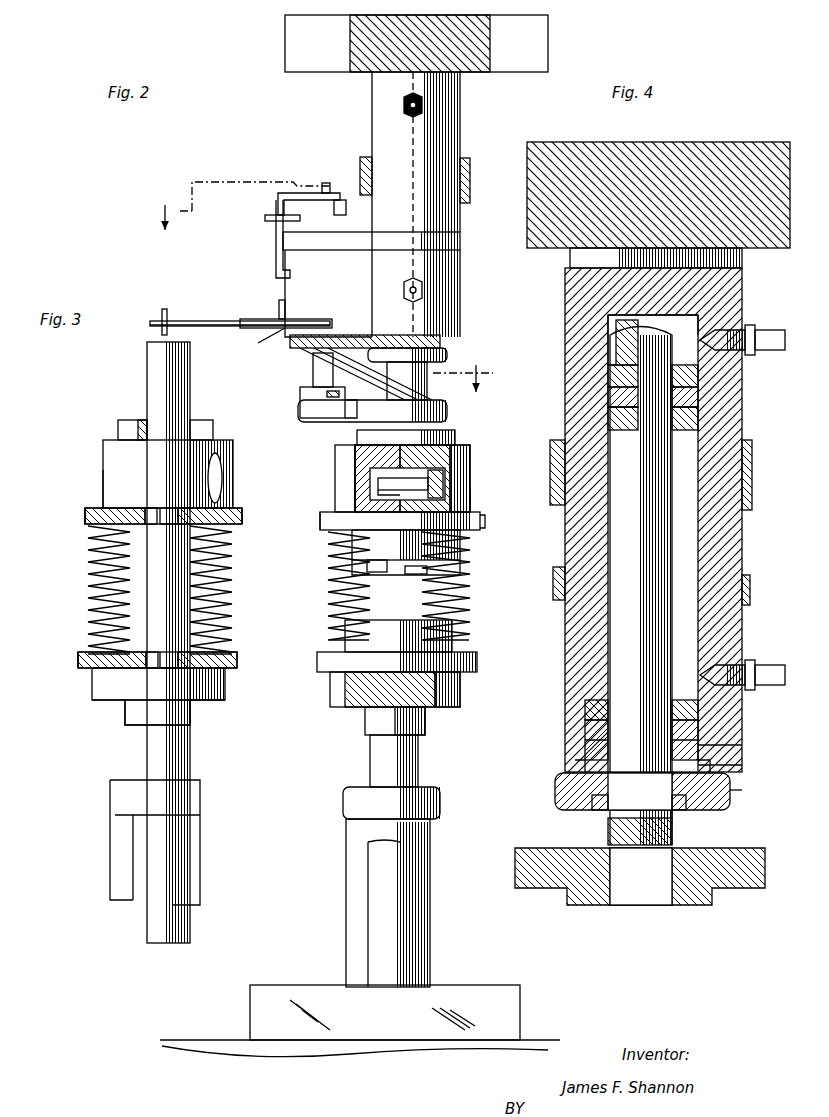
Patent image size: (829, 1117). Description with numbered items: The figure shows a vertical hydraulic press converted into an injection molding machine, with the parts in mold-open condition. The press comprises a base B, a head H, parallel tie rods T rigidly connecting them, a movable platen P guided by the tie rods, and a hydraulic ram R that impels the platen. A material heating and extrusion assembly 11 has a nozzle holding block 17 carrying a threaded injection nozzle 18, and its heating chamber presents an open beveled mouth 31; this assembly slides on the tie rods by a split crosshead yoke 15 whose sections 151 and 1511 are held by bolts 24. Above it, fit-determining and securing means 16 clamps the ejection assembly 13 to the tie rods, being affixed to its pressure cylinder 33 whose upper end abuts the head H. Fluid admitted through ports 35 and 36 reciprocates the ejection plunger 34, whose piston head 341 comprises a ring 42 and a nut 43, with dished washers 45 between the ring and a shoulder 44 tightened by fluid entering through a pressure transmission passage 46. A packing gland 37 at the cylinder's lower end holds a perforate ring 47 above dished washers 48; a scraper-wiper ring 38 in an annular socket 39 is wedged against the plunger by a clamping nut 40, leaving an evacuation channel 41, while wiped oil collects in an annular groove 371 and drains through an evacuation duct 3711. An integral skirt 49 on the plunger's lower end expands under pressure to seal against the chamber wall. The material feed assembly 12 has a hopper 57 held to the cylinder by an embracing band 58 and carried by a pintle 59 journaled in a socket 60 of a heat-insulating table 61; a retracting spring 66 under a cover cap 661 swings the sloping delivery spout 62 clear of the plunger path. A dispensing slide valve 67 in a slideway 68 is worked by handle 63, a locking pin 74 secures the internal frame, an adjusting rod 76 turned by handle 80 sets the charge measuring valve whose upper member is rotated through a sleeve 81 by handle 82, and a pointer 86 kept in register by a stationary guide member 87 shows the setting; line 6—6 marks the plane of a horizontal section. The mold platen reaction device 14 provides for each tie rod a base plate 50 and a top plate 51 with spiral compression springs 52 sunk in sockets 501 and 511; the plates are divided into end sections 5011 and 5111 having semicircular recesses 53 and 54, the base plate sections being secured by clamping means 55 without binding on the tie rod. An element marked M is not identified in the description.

In FIG. 2, the head H is at (512, 75).
In FIG. 4, the head H is at (553, 248).
In FIG. 2, the ejection assembly 13 is at (370, 127).
In FIG. 4, the ejection assembly 13 is at (563, 375).
In FIG. 2, the port 35 is at (403, 104).
In FIG. 4, the port 35 is at (738, 328).
In FIG. 2, the port 36 is at (422, 287).
In FIG. 4, the port 36 is at (740, 665).
In FIG. 2, the pressure cylinder 33 is at (360, 163).
In FIG. 4, the pressure cylinder 33 is at (606, 397).
In FIG. 2, the fit-determining and securing means 16 is at (468, 185).
In FIG. 4, the fit-determining and securing means 16 is at (550, 482).
In FIG. 2, the embracing band 58 is at (460, 240).
In FIG. 4, the embracing band 58 is at (553, 598).
In FIG. 2, the hopper 57 is at (288, 292).
In FIG. 2, the handle 82 is at (278, 196).
In FIG. 2, the adjusting rod 76 is at (322, 189).
In FIG. 2, the handle 80 is at (300, 188).
In FIG. 2, the sleeve 81 is at (346, 207).
In FIG. 2, the stationary guide member 87 is at (265, 218).
In FIG. 2, the pointer 86 is at (276, 269).
In FIG. 2, the section line 6— 6 is at (321, 304).
In FIG. 2, the handle 63 is at (165, 318).
In FIG. 2, the dispensing slide valve 67 is at (200, 320).
In FIG. 2, the slideway 68 is at (275, 318).
In FIG. 2, the locking pin 74 is at (258, 341).
In FIG. 2, the evacuation duct 3711 is at (412, 343).
In FIG. 4, the evacuation duct 3711 is at (712, 765).
In FIG. 2, the packing gland 37 is at (447, 355).
In FIG. 4, the packing gland 37 is at (718, 797).
In FIG. 2, the pintle 59 is at (300, 370).
In FIG. 2, the material feed assembly 12 is at (313, 364).
In FIG. 2, the socket 60 is at (300, 416).
In FIG. 2, the delivery spout 62 is at (327, 394).
In FIG. 2, the retracting spring 66 is at (300, 404).
In FIG. 2, the table 61 is at (447, 412).
In FIG. 4, the table 61 is at (515, 877).
In FIG. 2, the cover cap 661 is at (357, 436).
In FIG. 2, the fit-determining and securing means 15 is at (334, 482).
In FIG. 3, the fit-determining and securing means 15 is at (103, 483).
In FIG. 2, the bolts 24 is at (445, 478).
In FIG. 2, the section of crosshead yoke 151 is at (355, 495).
In FIG. 3, the section of crosshead yoke 151 is at (103, 455).
In FIG. 2, the section of crosshead yoke 1511 is at (470, 500).
In FIG. 2, the sockets 511 is at (474, 530).
In FIG. 3, the sockets 511 is at (95, 512).
In FIG. 2, the end sections of top plate 5111 is at (291, 532).
In FIG. 3, the end sections of top plate 5111 is at (88, 512).
In FIG. 3, the top plate 51 is at (186, 532).
In FIG. 2, the nozzle holding block 17 is at (495, 537).
In FIG. 2, the injection nozzle 18 is at (367, 568).
In FIG. 2, the material heating and extrusion assembly 11 is at (352, 565).
In FIG. 2, the mold platen reaction device 14 is at (312, 572).
In FIG. 3, the mold platen reaction device 14 is at (68, 575).
In FIG. 2, the spiral compression springs 52 is at (328, 628).
In FIG. 3, the spiral compression springs 52 is at (90, 598).
In FIG. 2, the nut M is at (454, 636).
In FIG. 2, the end sections of base plate 5011 is at (478, 668).
In FIG. 3, the end sections of base plate 5011 is at (92, 654).
In FIG. 2, the base plate 50 is at (395, 689).
In FIG. 3, the base plate 50 is at (86, 665).
In FIG. 3, the sockets 501 is at (92, 680).
In FIG. 3, the semicircular recesses 53 is at (152, 656).
In FIG. 3, the semicircular recesses 54 is at (212, 502).
In FIG. 3, the clamping means 55 is at (148, 516).
In FIG. 2, the movable platen P is at (348, 712).
In FIG. 3, the movable platen P is at (116, 703).
In FIG. 2, the tie rods T is at (370, 895).
In FIG. 3, the tie rods T is at (140, 925).
In FIG. 2, the hydraulic ram R is at (358, 934).
In FIG. 3, the hydraulic ram R is at (128, 875).
In FIG. 2, the base B is at (283, 1000).
In FIG. 4, the ejection plunger 34 is at (670, 567).
In FIG. 4, the piston head 341 is at (625, 362).
In FIG. 4, the nut 43 is at (620, 325).
In FIG. 4, the pressure transmission passage 46 is at (612, 332).
In FIG. 4, the ring 42 is at (700, 385).
In FIG. 4, the washers 45 is at (700, 405).
In FIG. 4, the shoulder 44 is at (610, 420).
In FIG. 4, the perforate ring 47 is at (588, 707).
In FIG. 4, the dished washers 48 is at (588, 738).
In FIG. 4, the annular socket 39 is at (575, 763).
In FIG. 4, the scraper-wiper ring 38 is at (556, 790).
In FIG. 4, the annular groove 371 is at (705, 755).
In FIG. 4, the evacuation channel 41 is at (600, 808).
In FIG. 4, the annular clamping nut 40 is at (682, 810).
In FIG. 4, the peripheral skirt 49 is at (610, 838).
In FIG. 4, the mouth 31 is at (690, 852).